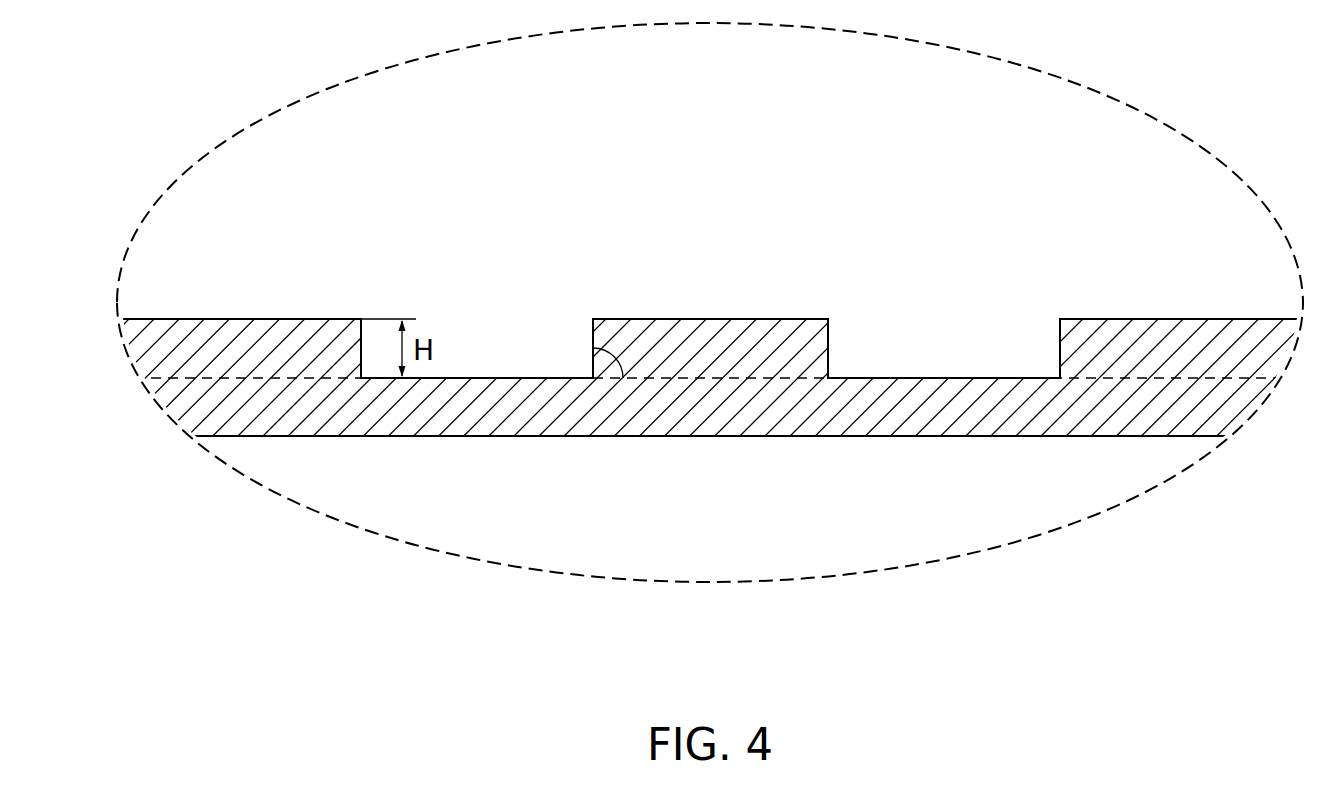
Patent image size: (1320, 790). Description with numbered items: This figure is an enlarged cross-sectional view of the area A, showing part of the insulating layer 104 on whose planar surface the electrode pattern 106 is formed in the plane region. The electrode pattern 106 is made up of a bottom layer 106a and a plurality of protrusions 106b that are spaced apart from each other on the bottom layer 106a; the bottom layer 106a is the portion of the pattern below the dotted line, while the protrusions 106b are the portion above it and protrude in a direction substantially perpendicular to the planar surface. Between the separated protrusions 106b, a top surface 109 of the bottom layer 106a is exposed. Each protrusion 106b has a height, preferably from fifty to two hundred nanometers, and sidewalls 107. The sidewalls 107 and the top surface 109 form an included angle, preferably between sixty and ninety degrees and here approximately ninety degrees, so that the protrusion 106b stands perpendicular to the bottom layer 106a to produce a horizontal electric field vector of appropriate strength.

The area A is at (287, 106).
The insulating layer 104 is at (890, 535).
The electrode pattern 106 is at (664, 308).
The bottom layer 106a is at (785, 417).
The protrusions 106b is at (828, 222).
The sidewalls 107 is at (591, 340).
The top surface 109 is at (651, 382).